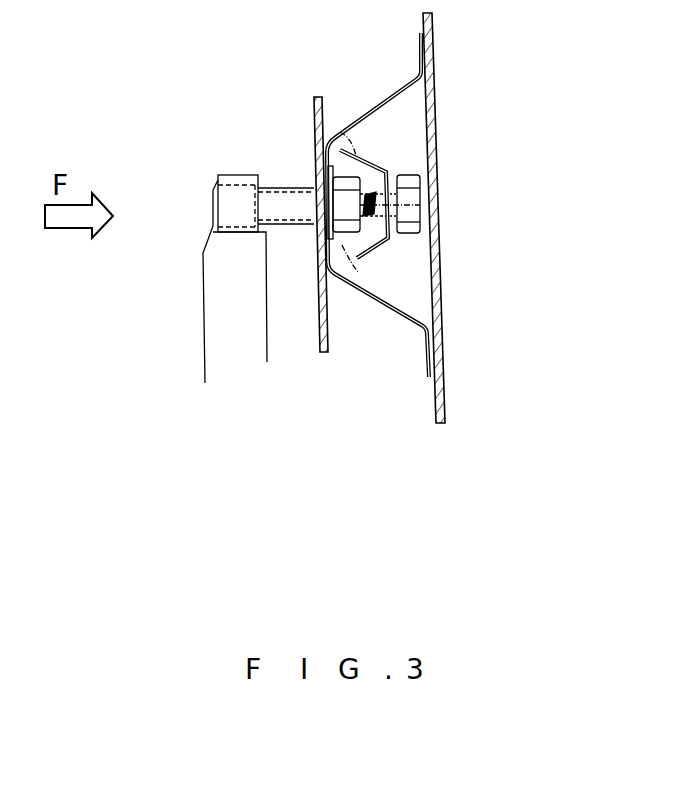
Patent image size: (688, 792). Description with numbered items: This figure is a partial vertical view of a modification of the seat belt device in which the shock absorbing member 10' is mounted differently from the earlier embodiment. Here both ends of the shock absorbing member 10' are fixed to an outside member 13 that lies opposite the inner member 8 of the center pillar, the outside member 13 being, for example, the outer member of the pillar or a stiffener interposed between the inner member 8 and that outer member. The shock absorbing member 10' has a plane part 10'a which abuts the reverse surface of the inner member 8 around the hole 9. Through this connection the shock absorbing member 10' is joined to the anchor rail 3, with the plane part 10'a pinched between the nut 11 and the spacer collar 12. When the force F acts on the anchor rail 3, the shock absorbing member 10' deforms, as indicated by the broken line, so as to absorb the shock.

The anchor rail 3 is at (203, 338).
The inner member 8 is at (314, 100).
The hole 9 is at (318, 237).
The shock absorbing member 10' is at (378, 202).
The plane part 10'a is at (441, 152).
The nut 11 is at (351, 252).
The spacer collar 12 is at (288, 186).
The outside member 13 is at (434, 137).